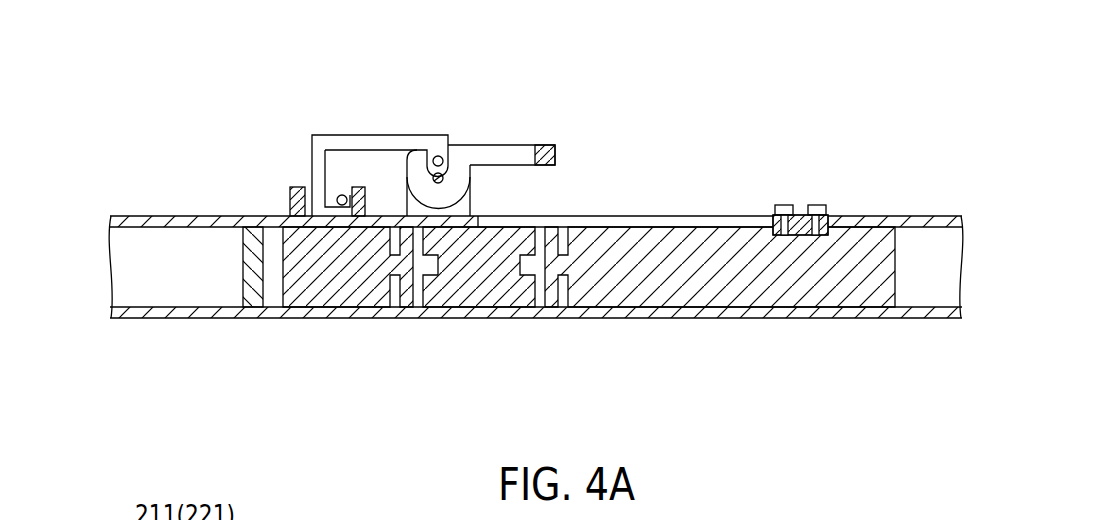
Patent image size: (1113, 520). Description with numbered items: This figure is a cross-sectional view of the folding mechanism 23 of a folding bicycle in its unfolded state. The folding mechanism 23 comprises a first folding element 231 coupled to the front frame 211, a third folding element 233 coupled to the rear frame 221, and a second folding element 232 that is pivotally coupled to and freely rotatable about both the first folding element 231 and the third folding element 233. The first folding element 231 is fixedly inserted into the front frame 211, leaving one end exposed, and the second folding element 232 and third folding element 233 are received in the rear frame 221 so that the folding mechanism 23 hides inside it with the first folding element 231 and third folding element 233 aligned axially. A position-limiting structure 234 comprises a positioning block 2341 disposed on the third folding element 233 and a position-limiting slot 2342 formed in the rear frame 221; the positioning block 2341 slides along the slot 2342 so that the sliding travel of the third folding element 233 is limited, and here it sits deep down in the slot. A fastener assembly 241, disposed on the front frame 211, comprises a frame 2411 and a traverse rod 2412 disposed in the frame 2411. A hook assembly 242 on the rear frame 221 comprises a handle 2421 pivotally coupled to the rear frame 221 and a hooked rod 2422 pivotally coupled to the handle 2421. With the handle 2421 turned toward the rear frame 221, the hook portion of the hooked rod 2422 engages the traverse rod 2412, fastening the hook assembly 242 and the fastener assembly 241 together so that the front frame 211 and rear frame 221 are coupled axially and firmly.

The folding mechanism 23 is at (680, 398).
The first folding element 231 is at (328, 302).
The second folding element 232 is at (513, 288).
The third folding element 233 is at (602, 290).
The front frame 211 is at (173, 312).
The rear frame 221 is at (922, 313).
The position-limiting structure 234 is at (830, 133).
The positioning block 2341 is at (800, 205).
The position-limiting slot 2342 is at (705, 221).
The fastener assembly 241 is at (327, 87).
The frame 2411 is at (290, 203).
The traverse rod 2412 is at (348, 193).
The hook assembly 242 is at (553, 40).
The handle 2421 is at (507, 155).
The hooked rod 2422 is at (413, 145).